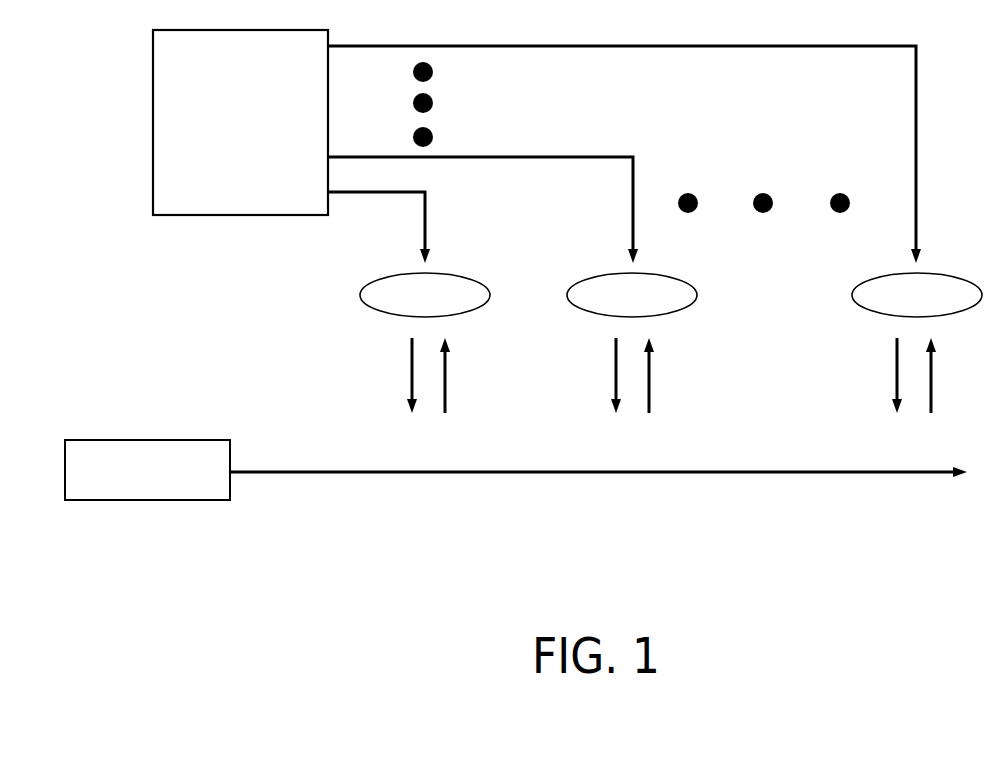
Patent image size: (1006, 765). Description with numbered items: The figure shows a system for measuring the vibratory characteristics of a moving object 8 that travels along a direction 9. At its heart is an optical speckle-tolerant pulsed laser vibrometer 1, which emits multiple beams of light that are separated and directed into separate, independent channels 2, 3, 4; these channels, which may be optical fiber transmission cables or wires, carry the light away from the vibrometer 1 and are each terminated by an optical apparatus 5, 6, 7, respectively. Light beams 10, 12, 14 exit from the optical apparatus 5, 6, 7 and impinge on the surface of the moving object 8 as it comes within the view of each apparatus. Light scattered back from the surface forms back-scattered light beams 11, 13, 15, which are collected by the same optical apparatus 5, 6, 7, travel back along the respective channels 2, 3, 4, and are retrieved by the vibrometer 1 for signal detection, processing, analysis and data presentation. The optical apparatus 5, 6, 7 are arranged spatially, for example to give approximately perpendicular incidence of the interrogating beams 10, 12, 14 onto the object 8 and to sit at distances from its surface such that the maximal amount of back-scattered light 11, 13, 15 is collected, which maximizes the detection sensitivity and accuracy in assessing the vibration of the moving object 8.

The optical speckle-tolerant pulsed laser vibrometer 1 is at (240, 122).
The channel 2 is at (379, 227).
The channel 3 is at (483, 210).
The channel 4 is at (624, 154).
The optical apparatus 5 is at (410, 295).
The optical apparatus 6 is at (617, 295).
The optical apparatus 7 is at (903, 295).
The moving object 8 is at (147, 452).
The direction 9 is at (598, 489).
The light beam 10 is at (390, 375).
The back-scattered light beam 11 is at (458, 375).
The light beam 12 is at (594, 375).
The back-scattered light beam 13 is at (663, 375).
The light beam 14 is at (875, 375).
The back-scattered light beam 15 is at (945, 375).